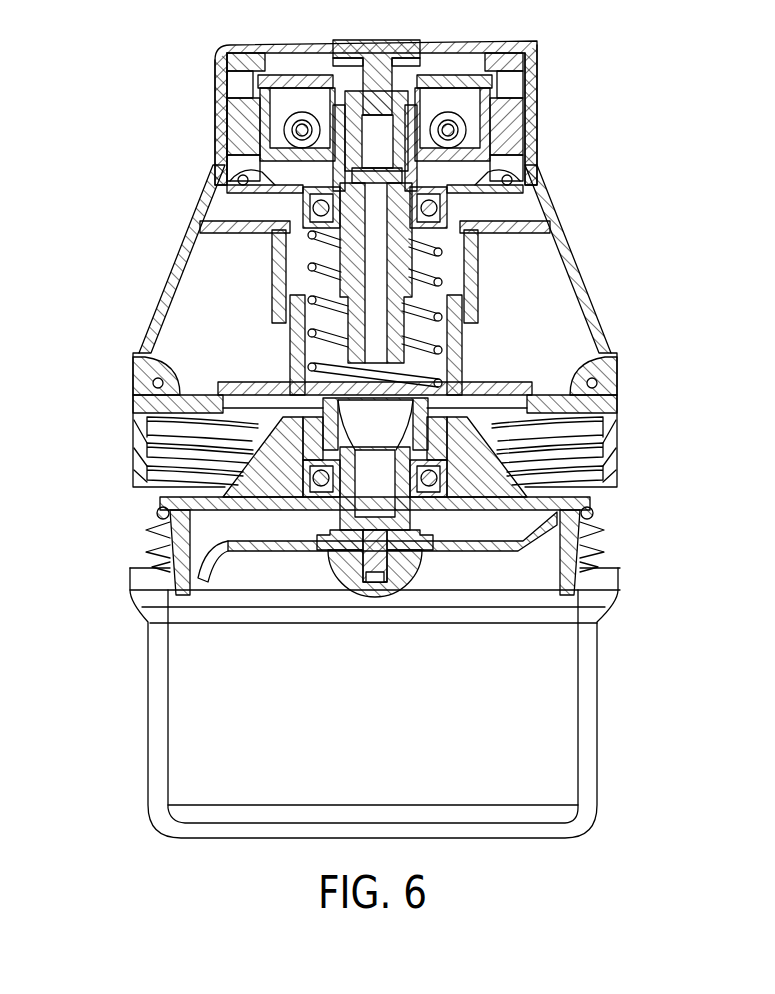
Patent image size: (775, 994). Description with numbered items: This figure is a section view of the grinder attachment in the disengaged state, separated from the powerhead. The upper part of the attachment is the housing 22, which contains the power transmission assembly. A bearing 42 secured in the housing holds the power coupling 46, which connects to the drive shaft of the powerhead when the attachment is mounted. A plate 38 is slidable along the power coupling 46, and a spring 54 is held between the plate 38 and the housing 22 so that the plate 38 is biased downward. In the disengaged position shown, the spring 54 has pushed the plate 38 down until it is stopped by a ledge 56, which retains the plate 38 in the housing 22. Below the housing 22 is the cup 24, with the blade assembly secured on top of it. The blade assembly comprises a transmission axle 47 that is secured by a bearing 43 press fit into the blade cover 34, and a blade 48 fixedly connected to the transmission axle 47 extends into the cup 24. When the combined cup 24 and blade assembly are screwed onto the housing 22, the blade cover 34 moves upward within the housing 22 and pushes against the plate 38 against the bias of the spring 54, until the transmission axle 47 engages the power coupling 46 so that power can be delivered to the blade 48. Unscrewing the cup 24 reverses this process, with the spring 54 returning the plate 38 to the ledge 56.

The housing 22 is at (228, 120).
The cup 24 is at (567, 688).
The blade cover 34 is at (256, 488).
The plate 38 is at (513, 390).
The bearing 42 is at (313, 205).
The bearing 43 is at (310, 486).
The power coupling 46 is at (400, 258).
The transmission axle 47 is at (338, 440).
The blade 48 is at (257, 570).
The spring 54 is at (440, 282).
The ledge 56 is at (200, 406).